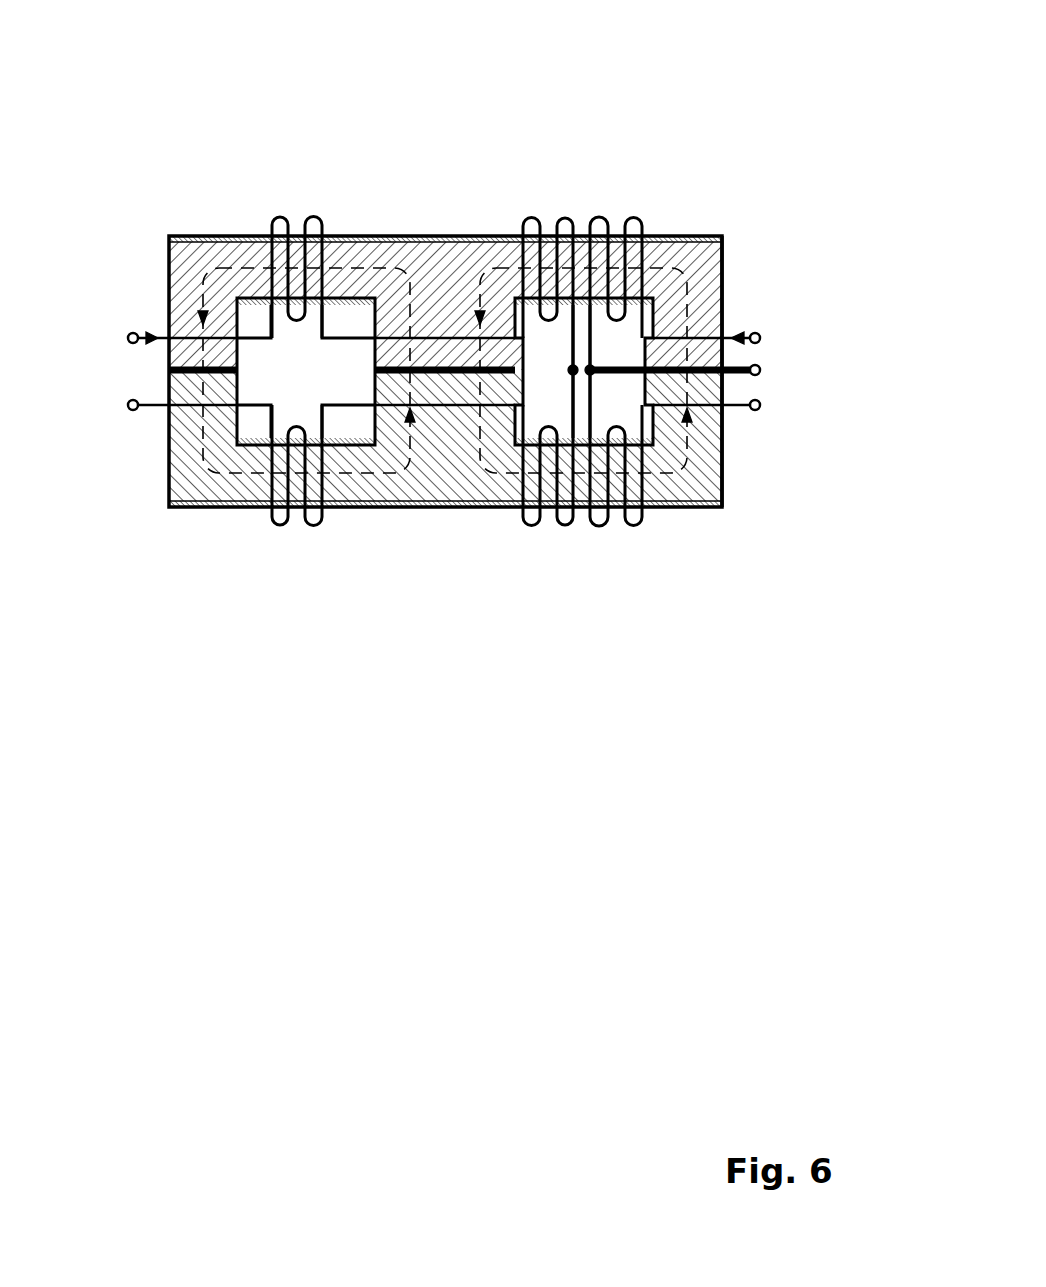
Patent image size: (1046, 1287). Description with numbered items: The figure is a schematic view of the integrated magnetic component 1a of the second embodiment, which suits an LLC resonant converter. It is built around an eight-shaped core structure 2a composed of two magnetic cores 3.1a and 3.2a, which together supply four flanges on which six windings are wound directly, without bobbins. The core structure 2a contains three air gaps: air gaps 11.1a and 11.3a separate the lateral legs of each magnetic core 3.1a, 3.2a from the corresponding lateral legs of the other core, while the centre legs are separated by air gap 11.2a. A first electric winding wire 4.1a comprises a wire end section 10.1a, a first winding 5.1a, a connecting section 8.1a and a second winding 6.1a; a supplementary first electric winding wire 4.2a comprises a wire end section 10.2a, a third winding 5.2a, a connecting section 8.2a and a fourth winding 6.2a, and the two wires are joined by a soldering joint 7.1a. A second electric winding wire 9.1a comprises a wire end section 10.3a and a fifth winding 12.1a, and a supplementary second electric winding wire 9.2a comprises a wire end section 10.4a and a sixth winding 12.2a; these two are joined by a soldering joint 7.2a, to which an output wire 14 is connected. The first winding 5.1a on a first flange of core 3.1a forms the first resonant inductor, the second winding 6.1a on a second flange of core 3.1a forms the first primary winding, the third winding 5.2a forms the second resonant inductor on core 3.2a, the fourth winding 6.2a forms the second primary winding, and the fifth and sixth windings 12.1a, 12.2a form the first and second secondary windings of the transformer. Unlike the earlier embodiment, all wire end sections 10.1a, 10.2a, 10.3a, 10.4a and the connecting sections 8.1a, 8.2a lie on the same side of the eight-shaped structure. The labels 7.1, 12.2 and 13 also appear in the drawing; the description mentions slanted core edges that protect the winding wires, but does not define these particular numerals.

The integrated magnetic component 1a is at (154, 737).
The 8-shaped core structure 2a is at (169, 483).
The first magnetic core 3.1a is at (410, 330).
The second magnetic core 3.2a is at (398, 470).
The first electric winding wire 4.1a is at (238, 330).
The supplementary first electric winding wire 4.2a is at (248, 410).
The first winding 5.1a is at (283, 232).
The third winding 5.2a is at (288, 520).
The second winding 6.1a is at (555, 222).
The fourth winding 6.2a is at (520, 520).
The winding turn 7.1 is at (325, 235).
The soldering joint 7.1a is at (580, 375).
The soldering joint 7.2a is at (597, 375).
The connecting section 8.1a is at (423, 325).
The connecting section 8.2a is at (470, 410).
The second electric winding wire 9.1a is at (723, 252).
The supplementary second electric winding wire 9.2a is at (723, 478).
The wire end section 10.1a is at (156, 333).
The wire end section 10.2a is at (157, 410).
The wire end section 10.3a is at (753, 331).
The wire end section 10.4a is at (753, 411).
The air gap 11.1a is at (167, 370).
The air gap 11.2a is at (442, 374).
The air gap 11.3a is at (723, 380).
The fifth winding 12.1a is at (602, 240).
The sixth winding 12.2a is at (640, 523).
The secondary winding 12.2 is at (312, 924).
The center tap connection 13 is at (607, 228).
The output wire 14 is at (762, 365).